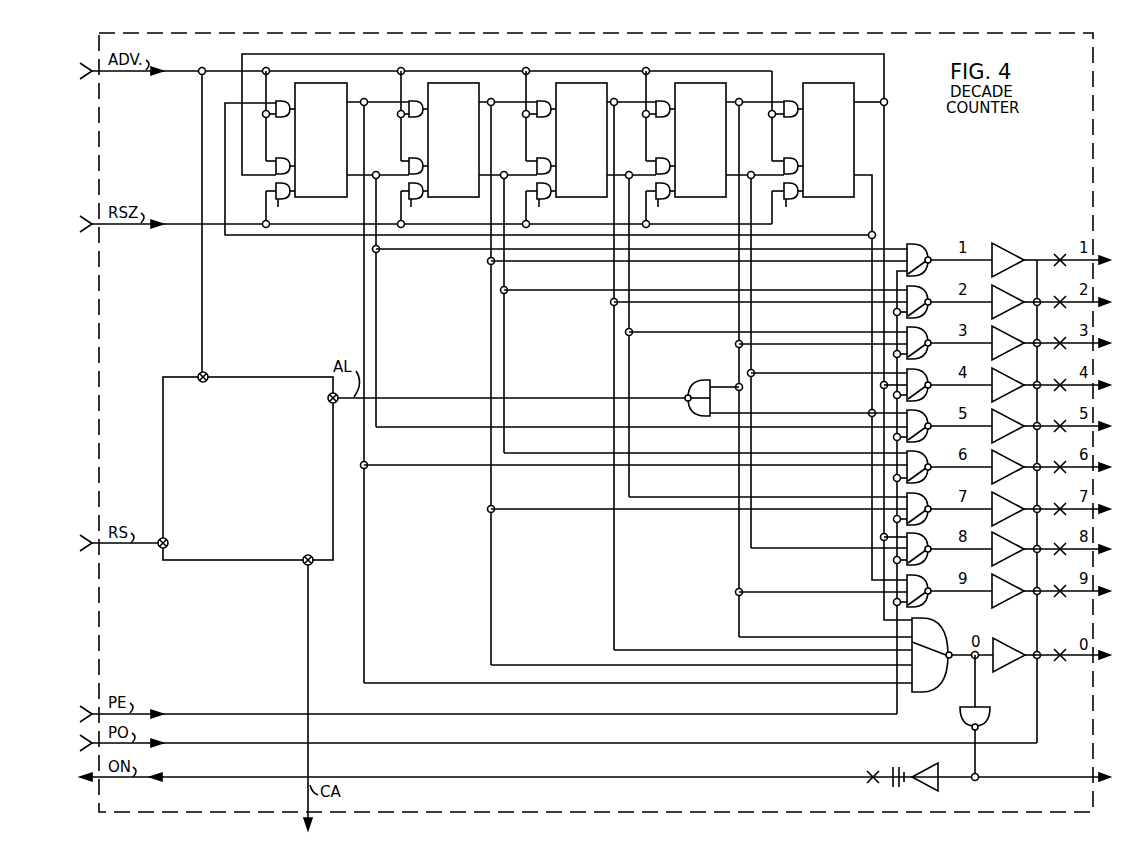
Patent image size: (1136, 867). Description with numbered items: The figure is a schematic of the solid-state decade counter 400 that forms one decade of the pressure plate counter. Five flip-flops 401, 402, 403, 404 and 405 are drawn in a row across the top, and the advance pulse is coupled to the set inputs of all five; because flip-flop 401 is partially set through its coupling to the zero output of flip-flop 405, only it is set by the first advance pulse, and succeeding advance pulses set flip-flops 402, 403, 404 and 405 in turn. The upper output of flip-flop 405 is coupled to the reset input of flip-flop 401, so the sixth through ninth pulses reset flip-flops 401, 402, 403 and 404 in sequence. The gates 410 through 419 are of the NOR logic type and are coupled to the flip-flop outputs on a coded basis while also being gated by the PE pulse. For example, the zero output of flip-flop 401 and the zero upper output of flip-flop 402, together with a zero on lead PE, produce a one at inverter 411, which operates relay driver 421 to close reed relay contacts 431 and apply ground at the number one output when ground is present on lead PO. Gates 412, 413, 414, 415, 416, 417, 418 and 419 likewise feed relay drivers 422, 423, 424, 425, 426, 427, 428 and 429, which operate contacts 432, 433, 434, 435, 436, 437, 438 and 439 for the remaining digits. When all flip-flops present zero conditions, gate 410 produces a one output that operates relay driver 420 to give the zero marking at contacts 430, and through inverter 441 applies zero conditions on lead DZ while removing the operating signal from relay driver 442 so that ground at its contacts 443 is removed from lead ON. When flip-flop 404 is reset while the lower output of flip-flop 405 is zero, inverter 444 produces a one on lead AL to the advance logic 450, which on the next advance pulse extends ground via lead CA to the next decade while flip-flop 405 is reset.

The decade counter 400 is at (995, 139).
The flip-flop 401 is at (311, 151).
The flip-flop 402 is at (444, 151).
The flip-flop 403 is at (572, 151).
The flip-flop 404 is at (691, 151).
The flip-flop 405 is at (819, 151).
The gate 410 is at (942, 632).
The inverter 411 is at (916, 244).
The gate 412 is at (949, 294).
The gate 413 is at (949, 335).
The gate 414 is at (949, 377).
The gate 415 is at (949, 418).
The gate 416 is at (949, 459).
The gate 417 is at (949, 501).
The gate 418 is at (949, 541).
The gate 419 is at (949, 583).
The relay driver 420 is at (1004, 639).
The relay driver 421 is at (1006, 246).
The relay driver 422 is at (1014, 295).
The relay driver 423 is at (1014, 336).
The relay driver 424 is at (1014, 378).
The relay driver 425 is at (1014, 419).
The relay driver 426 is at (1014, 460).
The relay driver 427 is at (1014, 502).
The relay driver 428 is at (1014, 542).
The relay driver 429 is at (1014, 584).
The contacts 430 is at (1058, 648).
The contacts 431 is at (1058, 255).
The contacts 432 is at (1062, 286).
The contacts 433 is at (1062, 327).
The contacts 434 is at (1062, 369).
The contacts 435 is at (1062, 410).
The contacts 436 is at (1062, 451).
The contacts 437 is at (1062, 493).
The contacts 438 is at (1062, 533).
The contacts 439 is at (1062, 575).
The inverter 441 is at (988, 710).
The relay driver 442 is at (941, 782).
The contacts 443 is at (874, 770).
The inverter 444 is at (708, 380).
The advance logic 450 is at (265, 495).